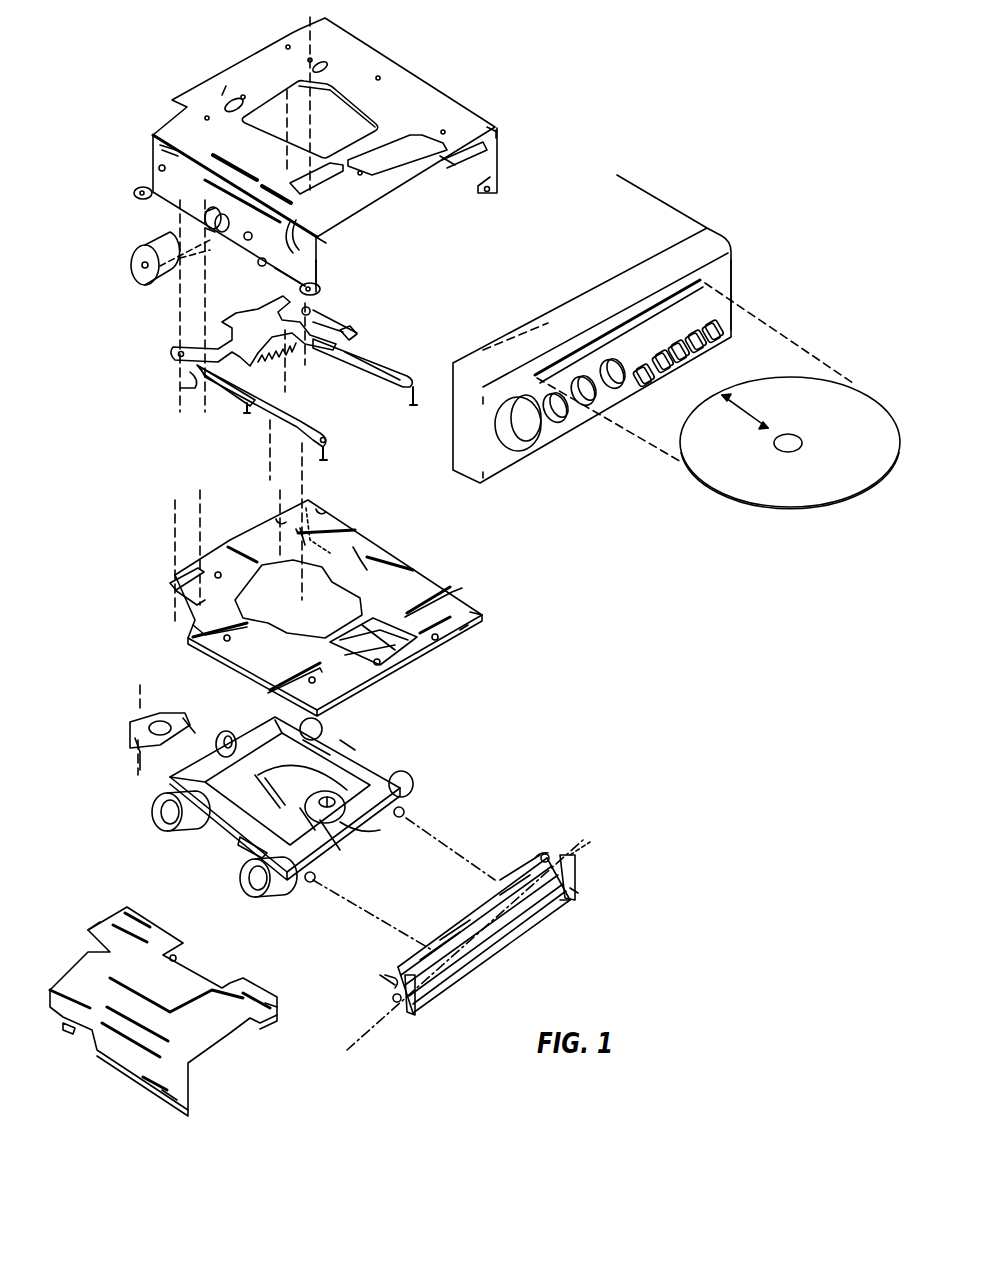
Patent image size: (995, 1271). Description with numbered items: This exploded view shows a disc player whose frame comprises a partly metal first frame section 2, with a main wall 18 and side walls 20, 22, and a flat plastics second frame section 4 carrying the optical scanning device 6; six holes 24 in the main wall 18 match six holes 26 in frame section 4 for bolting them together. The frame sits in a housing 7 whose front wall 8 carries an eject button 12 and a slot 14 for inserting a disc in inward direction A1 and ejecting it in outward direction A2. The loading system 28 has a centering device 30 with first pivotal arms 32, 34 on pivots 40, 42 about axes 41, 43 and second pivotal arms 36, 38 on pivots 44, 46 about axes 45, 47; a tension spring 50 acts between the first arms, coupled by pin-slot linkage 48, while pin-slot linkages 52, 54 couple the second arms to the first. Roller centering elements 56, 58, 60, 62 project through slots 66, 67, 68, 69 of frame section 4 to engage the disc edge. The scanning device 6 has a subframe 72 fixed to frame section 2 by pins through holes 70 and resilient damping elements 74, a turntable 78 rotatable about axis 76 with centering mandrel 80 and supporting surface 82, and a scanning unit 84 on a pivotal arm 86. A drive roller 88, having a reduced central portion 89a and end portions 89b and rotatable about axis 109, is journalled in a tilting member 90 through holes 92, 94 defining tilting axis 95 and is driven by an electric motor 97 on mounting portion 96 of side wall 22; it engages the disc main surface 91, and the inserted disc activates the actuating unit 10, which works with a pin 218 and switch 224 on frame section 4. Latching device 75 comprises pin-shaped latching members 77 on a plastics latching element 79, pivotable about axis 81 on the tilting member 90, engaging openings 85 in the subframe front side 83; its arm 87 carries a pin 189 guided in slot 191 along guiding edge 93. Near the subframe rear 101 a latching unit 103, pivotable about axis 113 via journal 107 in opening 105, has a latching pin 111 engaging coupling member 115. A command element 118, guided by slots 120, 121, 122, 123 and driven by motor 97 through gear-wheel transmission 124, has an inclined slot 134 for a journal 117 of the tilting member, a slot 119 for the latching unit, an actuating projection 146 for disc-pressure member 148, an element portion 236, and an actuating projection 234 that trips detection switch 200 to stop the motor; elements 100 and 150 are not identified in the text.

The first frame section 2 is at (489, 128).
The second frame section 4 is at (470, 628).
The optical scanning device 6 is at (400, 752).
The housing 7 is at (653, 195).
The front wall 8 is at (725, 270).
The actuating unit 10 is at (402, 675).
The eject button 12 is at (713, 338).
The slot 14 is at (700, 284).
The main wall 18 is at (420, 92).
The side wall 20 is at (499, 180).
The side wall 22 is at (317, 268).
The holes 24 is at (207, 118).
The holes 26 is at (344, 536).
The loading system 28 is at (603, 858).
The centering device 30 is at (394, 330).
The first pivotal arm 32 is at (388, 345).
The first pivotal arm 34 is at (315, 400).
The second pivotal arm 36 is at (356, 332).
The second pivotal arm 38 is at (225, 395).
The pivot 40 is at (280, 518).
The pivotal axis 41 is at (278, 475).
The pivot 42 is at (170, 588).
The pivotal axis 43 is at (175, 503).
The pivot 44 is at (305, 545).
The pivotal axis 45 is at (302, 495).
The pivot 46 is at (185, 608).
The pivotal axis 47 is at (200, 508).
The pin-slot linkage 48 is at (228, 322).
The tension spring 50 is at (265, 364).
The pin-slot linkage 52 is at (311, 311).
The pin-slot linkage 54 is at (180, 389).
The centering element 56 is at (418, 405).
The centering element 58 is at (328, 458).
The centering element 60 is at (348, 360).
The centering element 62 is at (251, 412).
The slot 66 is at (453, 580).
The slot 67 is at (275, 690).
The slot 68 is at (365, 548).
The slot 69 is at (198, 648).
The holes 70 is at (158, 170).
The subframe 72 is at (238, 847).
The resilient and damping elements 74 is at (322, 724).
The latching device 75 is at (330, 1041).
The axis of rotation 76 is at (380, 763).
The latching members 77 is at (495, 880).
The turntable 78 is at (340, 850).
The latching element 79 is at (515, 952).
The centering mandrel 80 is at (350, 820).
The pivotal axis 81 is at (362, 1050).
The supporting surface 82 is at (306, 825).
The front side 83 is at (375, 832).
The scanning unit 84 is at (268, 801).
The openings 85 is at (405, 812).
The pivotal arm 86 is at (292, 775).
The arm 87 is at (542, 853).
The drive roller 88 is at (545, 915).
The central portion 89a is at (460, 918).
The end portions 89b is at (518, 870).
The tilting member 90 is at (578, 895).
The main surface 91 is at (498, 135).
The holes 92 is at (565, 875).
The guiding edge 93 is at (285, 280).
The holes 94 is at (470, 170).
The tilting axis 95 is at (366, 1022).
The mounting portion 96 is at (225, 240).
The electric motor 97 is at (130, 262).
The slots 100 is at (240, 178).
The rear 101 is at (165, 770).
The latching unit 103 is at (134, 743).
The opening 105 is at (226, 86).
The journal 107 is at (130, 722).
The axis 109 is at (590, 841).
The latching pin 111 is at (215, 733).
The axis 113 is at (138, 686).
The coupling member 115 is at (215, 744).
The journal 117 is at (388, 972).
The command element 118 is at (88, 960).
The slot 119 is at (100, 918).
The guide slot 120 is at (145, 1090).
The guide slot 121 is at (165, 730).
The guide slot 122 is at (150, 917).
The guide slot 123 is at (238, 98).
The gear-wheel transmission 124 is at (115, 1055).
The inclined slot 134 is at (168, 1102).
The actuating projection 146 is at (178, 963).
The disc-pressure member 148 is at (333, 750).
The bent tab 150 is at (286, 183).
The pin 189 is at (540, 858).
The slot 191 is at (321, 288).
The detection switch 200 is at (68, 1036).
The pin 218 is at (405, 655).
The switch 224 is at (486, 618).
The actuating projection 234 is at (95, 1005).
The element portion 236 is at (270, 1000).
The inward direction A1 is at (745, 408).
The outward direction A2 is at (772, 417).